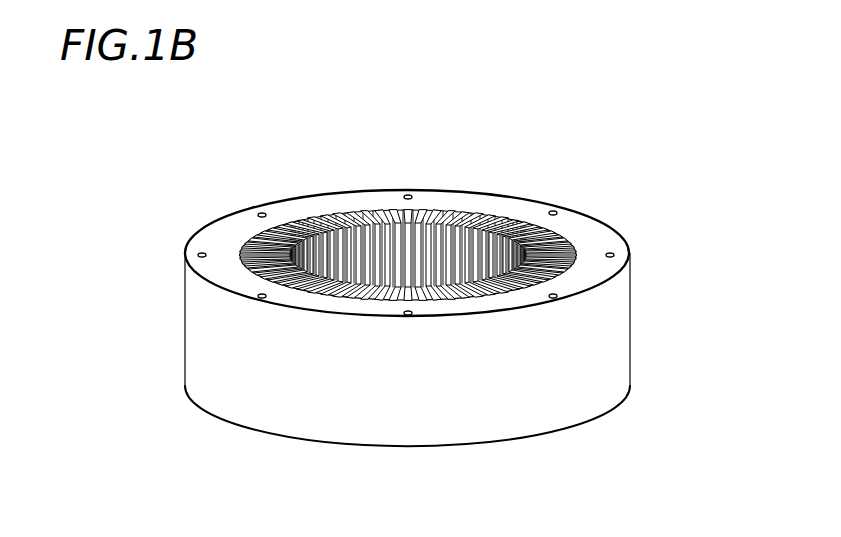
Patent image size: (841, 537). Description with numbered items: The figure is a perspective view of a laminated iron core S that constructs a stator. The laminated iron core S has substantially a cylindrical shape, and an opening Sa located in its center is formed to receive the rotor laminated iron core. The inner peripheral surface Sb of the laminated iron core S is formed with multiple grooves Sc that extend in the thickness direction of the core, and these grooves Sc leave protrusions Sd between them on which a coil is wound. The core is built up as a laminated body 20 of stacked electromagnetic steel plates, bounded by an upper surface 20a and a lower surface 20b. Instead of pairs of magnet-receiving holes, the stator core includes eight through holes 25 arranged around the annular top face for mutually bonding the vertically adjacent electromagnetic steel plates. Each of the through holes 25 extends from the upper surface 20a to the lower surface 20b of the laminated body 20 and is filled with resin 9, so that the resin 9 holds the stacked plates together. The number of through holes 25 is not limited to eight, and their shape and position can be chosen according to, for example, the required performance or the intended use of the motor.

The laminated iron core S is at (417, 301).
The opening Sa is at (436, 236).
The inner peripheral surface Sb is at (313, 250).
The grooves Sc is at (404, 238).
The protrusions Sd is at (445, 300).
The resin 9 is at (408, 195).
The laminated body 20 is at (417, 301).
The upper surface 20a is at (512, 208).
The lower surface 20b is at (510, 421).
The through holes 25 is at (614, 255).